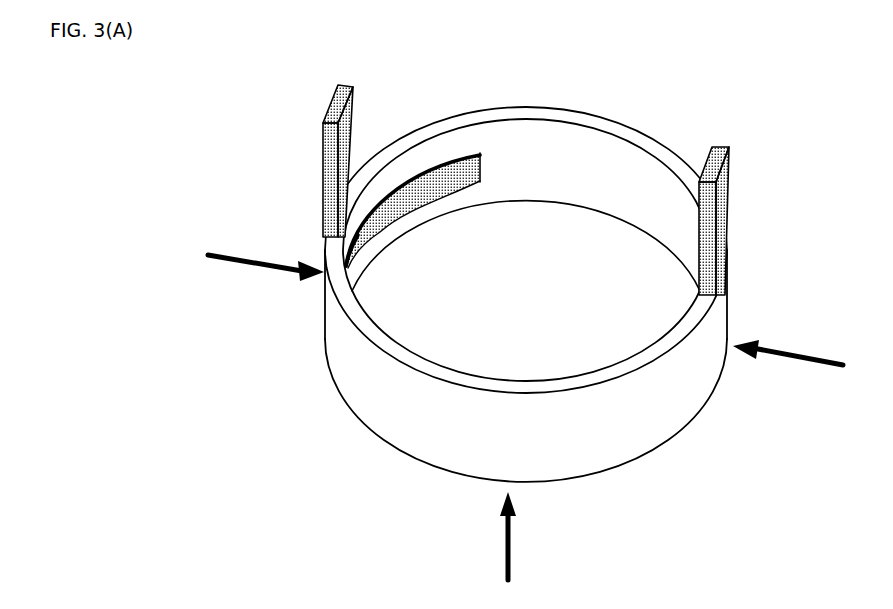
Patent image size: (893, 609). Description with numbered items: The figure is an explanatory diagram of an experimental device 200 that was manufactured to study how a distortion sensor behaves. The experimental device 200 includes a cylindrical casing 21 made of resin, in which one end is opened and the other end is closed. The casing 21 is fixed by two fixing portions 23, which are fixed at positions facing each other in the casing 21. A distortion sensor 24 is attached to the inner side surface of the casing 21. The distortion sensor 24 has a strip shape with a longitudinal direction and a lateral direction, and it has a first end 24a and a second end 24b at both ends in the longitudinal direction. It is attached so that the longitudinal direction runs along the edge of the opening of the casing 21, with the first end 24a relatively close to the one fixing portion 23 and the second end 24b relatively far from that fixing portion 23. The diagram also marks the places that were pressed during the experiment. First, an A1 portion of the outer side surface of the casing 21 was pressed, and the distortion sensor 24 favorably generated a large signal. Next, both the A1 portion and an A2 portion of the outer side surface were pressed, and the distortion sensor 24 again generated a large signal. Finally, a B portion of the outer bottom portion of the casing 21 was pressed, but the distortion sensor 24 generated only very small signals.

The experimental device 200 is at (542, 248).
The casing 21 is at (611, 124).
The fixing portion 23 is at (342, 86).
The distortion sensor 24 is at (442, 240).
The first end 24a is at (362, 252).
The second end 24b is at (465, 172).
The A1 portion A1 is at (266, 252).
The A2 portion A2 is at (788, 342).
The B portion B is at (493, 536).